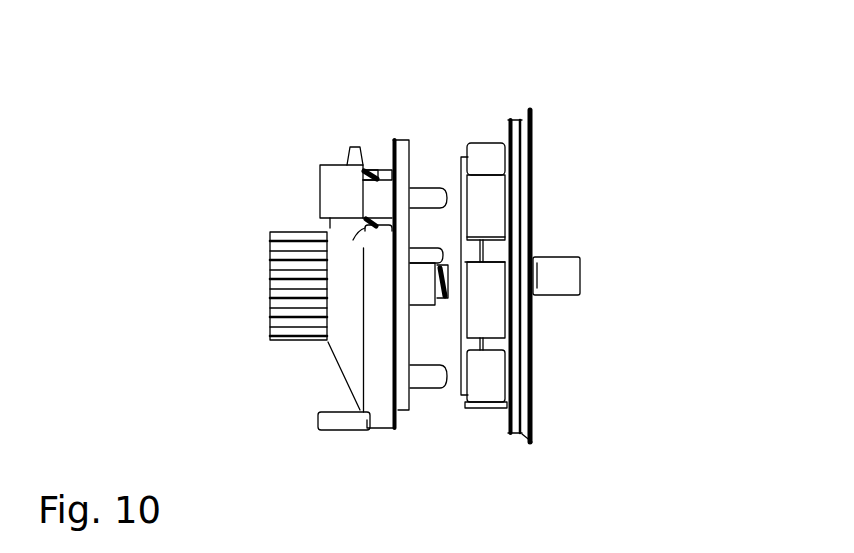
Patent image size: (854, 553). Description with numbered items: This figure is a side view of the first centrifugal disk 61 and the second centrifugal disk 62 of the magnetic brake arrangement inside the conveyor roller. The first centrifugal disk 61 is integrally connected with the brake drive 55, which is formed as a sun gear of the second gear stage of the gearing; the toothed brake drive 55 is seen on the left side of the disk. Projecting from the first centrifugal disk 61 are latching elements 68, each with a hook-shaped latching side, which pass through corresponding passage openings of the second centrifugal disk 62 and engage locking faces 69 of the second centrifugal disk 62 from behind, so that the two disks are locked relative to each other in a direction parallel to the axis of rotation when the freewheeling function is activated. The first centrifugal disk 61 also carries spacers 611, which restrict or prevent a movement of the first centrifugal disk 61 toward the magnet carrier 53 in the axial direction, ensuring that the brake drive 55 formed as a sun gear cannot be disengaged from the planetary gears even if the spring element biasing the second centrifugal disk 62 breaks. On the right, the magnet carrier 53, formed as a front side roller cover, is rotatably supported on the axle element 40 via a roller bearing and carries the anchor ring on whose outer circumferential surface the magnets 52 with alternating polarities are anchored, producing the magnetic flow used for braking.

The axle element 40 is at (562, 275).
The magnets 52 is at (485, 210).
The magnet carrier 53 is at (533, 237).
The brake drive 55 is at (290, 298).
The first centrifugal disk 61 is at (347, 350).
The spacers 611 is at (427, 377).
The second centrifugal disk 62 is at (407, 143).
The latching elements 68 is at (335, 188).
The locking faces 69 is at (380, 163).